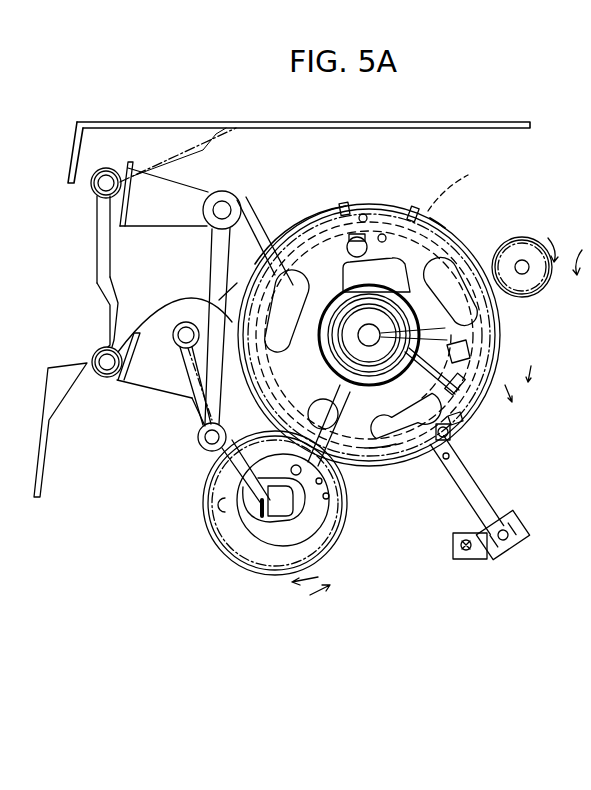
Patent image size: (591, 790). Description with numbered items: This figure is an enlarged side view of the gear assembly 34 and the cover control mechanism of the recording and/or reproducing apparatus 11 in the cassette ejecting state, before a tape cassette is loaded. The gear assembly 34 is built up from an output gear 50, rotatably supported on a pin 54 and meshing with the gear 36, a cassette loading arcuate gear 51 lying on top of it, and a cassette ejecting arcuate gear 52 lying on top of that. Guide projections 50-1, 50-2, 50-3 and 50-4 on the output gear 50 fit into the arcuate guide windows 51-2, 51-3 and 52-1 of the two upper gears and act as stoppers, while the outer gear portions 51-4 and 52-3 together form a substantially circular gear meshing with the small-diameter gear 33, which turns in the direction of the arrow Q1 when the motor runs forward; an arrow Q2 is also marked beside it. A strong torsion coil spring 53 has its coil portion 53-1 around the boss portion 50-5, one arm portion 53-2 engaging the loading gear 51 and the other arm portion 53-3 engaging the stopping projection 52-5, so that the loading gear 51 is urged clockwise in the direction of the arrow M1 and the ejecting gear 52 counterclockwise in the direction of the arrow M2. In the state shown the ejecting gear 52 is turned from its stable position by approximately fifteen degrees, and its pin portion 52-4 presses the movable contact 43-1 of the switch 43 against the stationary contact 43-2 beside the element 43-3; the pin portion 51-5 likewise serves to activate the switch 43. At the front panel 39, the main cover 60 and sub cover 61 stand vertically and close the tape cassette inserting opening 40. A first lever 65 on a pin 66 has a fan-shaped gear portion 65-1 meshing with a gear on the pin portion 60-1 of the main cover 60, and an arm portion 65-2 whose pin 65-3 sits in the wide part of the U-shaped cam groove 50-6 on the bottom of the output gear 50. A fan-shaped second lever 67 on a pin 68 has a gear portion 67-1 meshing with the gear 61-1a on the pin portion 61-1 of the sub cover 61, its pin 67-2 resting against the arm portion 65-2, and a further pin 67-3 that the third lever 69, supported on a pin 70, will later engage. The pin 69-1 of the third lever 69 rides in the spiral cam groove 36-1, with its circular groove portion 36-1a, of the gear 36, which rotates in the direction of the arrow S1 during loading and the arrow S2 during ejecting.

The recording and/or reproducing apparatus 11 is at (214, 121).
The tape cassette inserting opening 40 is at (70, 192).
The main cover 60 is at (215, 143).
The pin portion of main cover 60-1 is at (112, 166).
The sub cover 61 is at (98, 305).
The pin portion of sub cover 61-1 is at (107, 378).
The gear on pin portion of sub cover 61-1a is at (100, 350).
The front panel 39 is at (50, 424).
The first lever 65 is at (233, 196).
The gear portion of first lever 65-1 is at (121, 229).
The arm portion of first lever 65-2 is at (215, 267).
The pin of first lever 65-3 is at (330, 430).
The pin 66 is at (222, 202).
The second lever 67 is at (168, 390).
The gear portion of second lever 67-1 is at (137, 343).
The pin of second lever 67-2 is at (232, 286).
The pin of second lever 67-3 is at (168, 310).
The pin 68 is at (195, 420).
The third lever 69 is at (198, 438).
The pin of third lever 69-1 is at (220, 506).
The pin 70 is at (205, 455).
The gear 36 is at (242, 567).
The cam groove 36-1 is at (238, 535).
The circular groove portion 36-1a is at (303, 513).
The arrow S1 is at (316, 574).
The arrow S2 is at (307, 597).
The output gear 50 is at (360, 455).
The guide projection 50-1 is at (195, 320).
The guide projection 50-2 is at (358, 236).
The guide projection 50-3 is at (470, 311).
The guide projection 50-4 is at (395, 455).
The boss portion 50-5 is at (445, 385).
The cam groove 50-6 is at (455, 181).
The cassette loading arcuate gear 51 is at (268, 245).
The arcuate guide window 51-2 is at (268, 262).
The arcuate guide window 51-3 is at (412, 208).
The gear portion 51-4 is at (335, 205).
The pin portion 51-5 is at (367, 213).
The cassette ejecting arcuate gear 52 is at (470, 250).
The arcuate guide window 52-1 is at (447, 232).
The gear portion 52-3 is at (497, 333).
The pin portion 52-4 is at (452, 441).
The stopping projection 52-5 is at (460, 426).
The gear assembly 34 is at (445, 222).
The small-diameter gear 33 is at (522, 237).
The arrow Q1 is at (560, 247).
The rotation direction Q2 is at (582, 263).
The torsion coil spring 53 is at (342, 289).
The coil portion 53-1 is at (450, 341).
The arm portion 53-2 is at (344, 355).
The arm portion 53-3 is at (440, 372).
The pin 54 is at (362, 333).
The arrow M1 is at (522, 370).
The arrow M2 is at (525, 399).
The switch 43 is at (520, 545).
The movable contact 43-1 is at (470, 482).
The stationary contact 43-2 is at (480, 514).
The plunger 43-3 is at (493, 500).